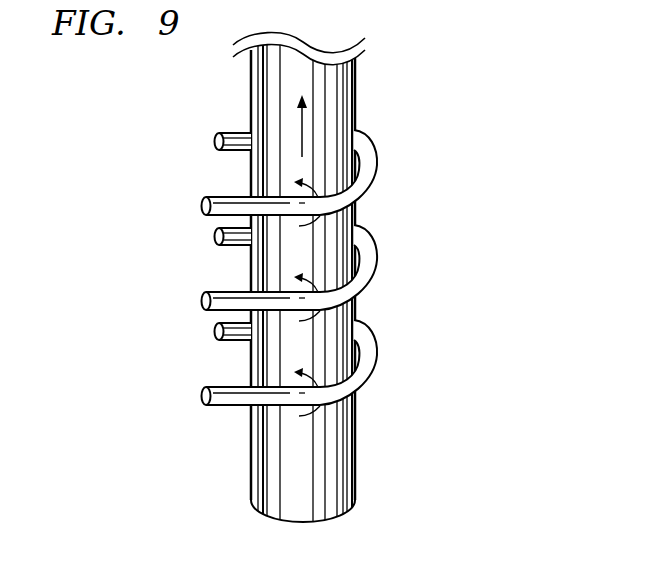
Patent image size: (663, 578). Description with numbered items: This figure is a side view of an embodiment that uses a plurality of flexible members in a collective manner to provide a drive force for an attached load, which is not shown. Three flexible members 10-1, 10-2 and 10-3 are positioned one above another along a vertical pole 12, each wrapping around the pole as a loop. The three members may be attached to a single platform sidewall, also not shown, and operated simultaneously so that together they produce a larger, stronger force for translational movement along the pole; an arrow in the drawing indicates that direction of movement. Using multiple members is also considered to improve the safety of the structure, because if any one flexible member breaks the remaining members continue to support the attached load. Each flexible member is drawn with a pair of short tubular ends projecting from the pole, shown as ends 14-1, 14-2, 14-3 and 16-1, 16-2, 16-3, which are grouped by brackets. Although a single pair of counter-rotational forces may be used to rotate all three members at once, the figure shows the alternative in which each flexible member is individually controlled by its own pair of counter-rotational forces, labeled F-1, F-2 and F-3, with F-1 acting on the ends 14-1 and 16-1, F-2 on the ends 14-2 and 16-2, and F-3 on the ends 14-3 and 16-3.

The column / tubular body 12 is at (357, 472).
The flexible member 10-1 is at (377, 350).
The flexible member 10-2 is at (377, 255).
The flexible member 10-3 is at (377, 160).
The first inlet tube 14-1 is at (203, 333).
The second inlet tube 14-2 is at (202, 238).
The third inlet tube 14-3 is at (201, 143).
The first outlet tube 16-1 is at (204, 396).
The second outlet tube 16-2 is at (204, 301).
The third outlet tube 16-3 is at (204, 206).
The pair of counter-rotational forces F-1 is at (259, 367).
The pair of counter-rotational forces F-2 is at (259, 272).
The pair of counter-rotational forces F-3 is at (259, 177).